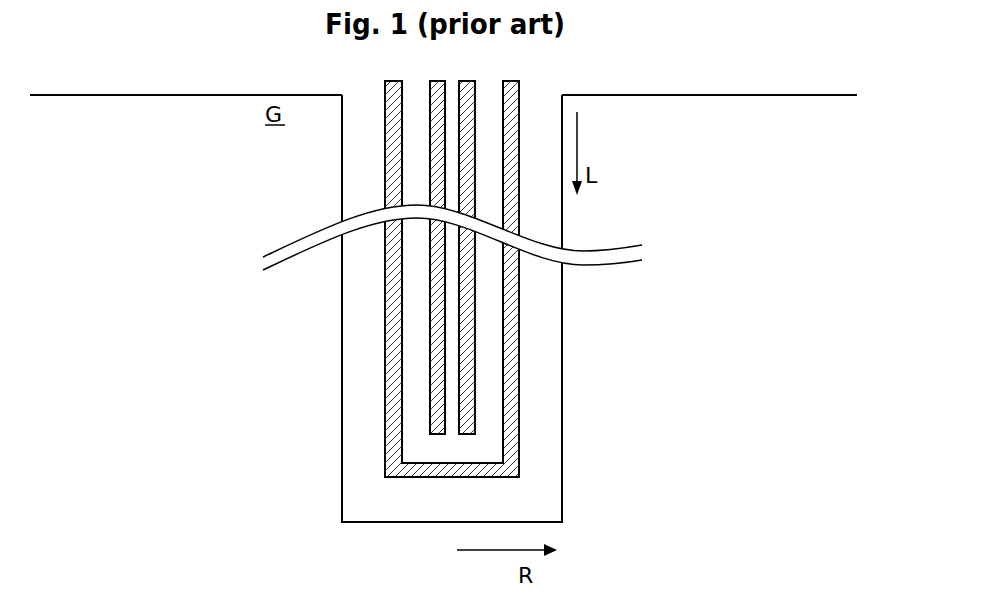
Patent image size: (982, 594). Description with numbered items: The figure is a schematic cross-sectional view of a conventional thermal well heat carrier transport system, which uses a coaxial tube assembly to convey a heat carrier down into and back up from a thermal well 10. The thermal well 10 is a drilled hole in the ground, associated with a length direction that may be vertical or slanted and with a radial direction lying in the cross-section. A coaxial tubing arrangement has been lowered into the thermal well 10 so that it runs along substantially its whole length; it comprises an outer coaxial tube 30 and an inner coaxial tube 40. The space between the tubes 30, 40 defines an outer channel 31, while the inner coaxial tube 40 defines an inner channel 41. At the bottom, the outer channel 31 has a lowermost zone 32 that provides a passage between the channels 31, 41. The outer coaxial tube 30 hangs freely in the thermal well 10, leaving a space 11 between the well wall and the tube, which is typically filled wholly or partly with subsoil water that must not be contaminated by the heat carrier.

The thermal well 10 is at (342, 166).
The space 11 is at (360, 428).
The outer coaxial tube 30 is at (387, 300).
The outer channel 31 is at (413, 312).
The lowermost zone 32 is at (453, 450).
The inner coaxial tube 40 is at (458, 353).
The inner channel 41 is at (452, 393).